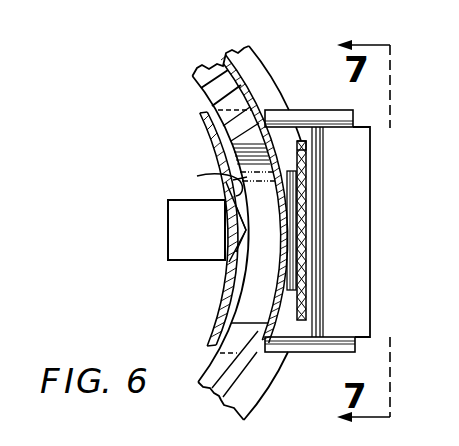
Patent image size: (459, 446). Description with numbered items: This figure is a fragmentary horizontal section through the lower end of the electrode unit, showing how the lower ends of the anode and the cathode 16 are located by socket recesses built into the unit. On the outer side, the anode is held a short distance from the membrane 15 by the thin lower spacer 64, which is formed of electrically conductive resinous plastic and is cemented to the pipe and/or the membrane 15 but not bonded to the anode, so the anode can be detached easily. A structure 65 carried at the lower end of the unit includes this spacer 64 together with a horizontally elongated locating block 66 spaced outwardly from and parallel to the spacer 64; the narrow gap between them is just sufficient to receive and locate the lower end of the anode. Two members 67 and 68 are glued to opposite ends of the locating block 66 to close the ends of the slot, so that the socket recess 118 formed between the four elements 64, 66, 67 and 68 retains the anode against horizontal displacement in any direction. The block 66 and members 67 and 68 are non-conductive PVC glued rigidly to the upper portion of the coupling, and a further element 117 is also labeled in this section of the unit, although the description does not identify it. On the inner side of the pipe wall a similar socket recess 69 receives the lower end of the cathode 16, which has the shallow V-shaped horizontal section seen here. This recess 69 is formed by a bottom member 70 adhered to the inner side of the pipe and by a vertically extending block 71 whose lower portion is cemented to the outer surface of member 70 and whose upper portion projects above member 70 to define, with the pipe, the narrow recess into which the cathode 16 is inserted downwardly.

The membrane 15 is at (252, 55).
The cathode 16 is at (201, 120).
The lower spacer 64 is at (300, 275).
The structure 65 is at (378, 243).
The locating block 66 is at (370, 315).
The end member 67 is at (305, 110).
The end member 68 is at (307, 352).
The socket recess 69 is at (230, 249).
The bottom member 70 is at (197, 176).
The vertically extending block 71 is at (168, 233).
The ring 117 is at (306, 148).
The socket recess 118 is at (313, 186).